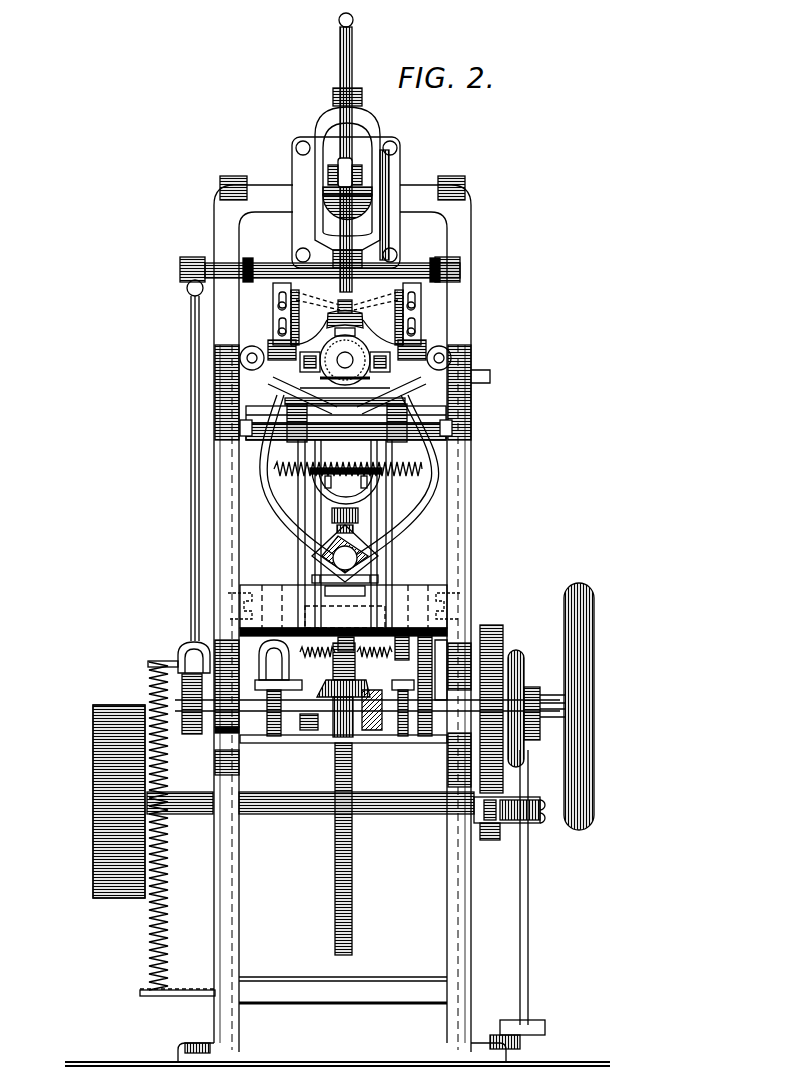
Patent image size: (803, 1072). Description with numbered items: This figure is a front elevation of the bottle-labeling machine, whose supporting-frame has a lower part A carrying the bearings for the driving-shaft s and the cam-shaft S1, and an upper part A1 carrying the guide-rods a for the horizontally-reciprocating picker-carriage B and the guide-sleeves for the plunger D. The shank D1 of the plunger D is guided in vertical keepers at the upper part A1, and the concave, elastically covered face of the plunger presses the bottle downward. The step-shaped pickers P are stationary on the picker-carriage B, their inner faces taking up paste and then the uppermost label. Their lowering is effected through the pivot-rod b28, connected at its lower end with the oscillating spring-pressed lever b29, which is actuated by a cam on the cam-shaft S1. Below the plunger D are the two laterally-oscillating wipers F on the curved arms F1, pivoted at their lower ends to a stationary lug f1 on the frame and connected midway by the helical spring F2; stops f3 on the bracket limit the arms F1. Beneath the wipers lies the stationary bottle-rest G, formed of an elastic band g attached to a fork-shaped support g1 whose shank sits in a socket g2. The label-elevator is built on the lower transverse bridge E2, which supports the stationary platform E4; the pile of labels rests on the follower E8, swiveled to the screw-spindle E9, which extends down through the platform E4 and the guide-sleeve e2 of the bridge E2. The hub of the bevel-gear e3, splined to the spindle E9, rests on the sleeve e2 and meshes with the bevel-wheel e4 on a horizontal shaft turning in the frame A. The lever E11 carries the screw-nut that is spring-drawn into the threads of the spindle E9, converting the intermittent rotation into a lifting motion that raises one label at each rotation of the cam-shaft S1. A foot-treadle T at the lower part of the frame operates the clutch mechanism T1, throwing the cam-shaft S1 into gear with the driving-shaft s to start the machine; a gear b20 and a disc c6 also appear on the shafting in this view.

The lower part of supporting-frame A is at (214, 552).
The upper part of supporting-frame A1 is at (225, 219).
The plunger shank D1 is at (352, 58).
The picker-carriage B is at (273, 322).
The plunger D is at (360, 318).
The guide-rods a is at (240, 356).
The pickers P is at (343, 395).
The wipers F is at (240, 415).
The curved arms F1 is at (262, 505).
The helical spring F2 is at (274, 470).
The bottle-rest G is at (346, 486).
The elastic band g is at (318, 482).
The fork-shaped support g1 is at (367, 484).
The socket g2 is at (358, 512).
The stops f3 is at (325, 552).
The stationary lug f1 is at (343, 586).
The follower E8 is at (375, 618).
The lever E11 is at (356, 648).
The stationary platform E4 is at (286, 688).
The bevel-gear e3 is at (348, 690).
The gear b20 is at (192, 719).
The guide-sleeve e2 is at (309, 725).
The bevel-wheel e4 is at (388, 708).
The lower transverse bridge E2 is at (304, 743).
The disc c6 is at (528, 664).
The cam-shaft S1 is at (568, 708).
The oscillating spring-pressed lever b29 is at (175, 657).
The pivot-rod b28 is at (191, 503).
The clutch mechanism T1 is at (515, 887).
The driving-shaft s is at (305, 814).
The screw-spindle E9 is at (352, 885).
The foot-treadle T is at (532, 1040).